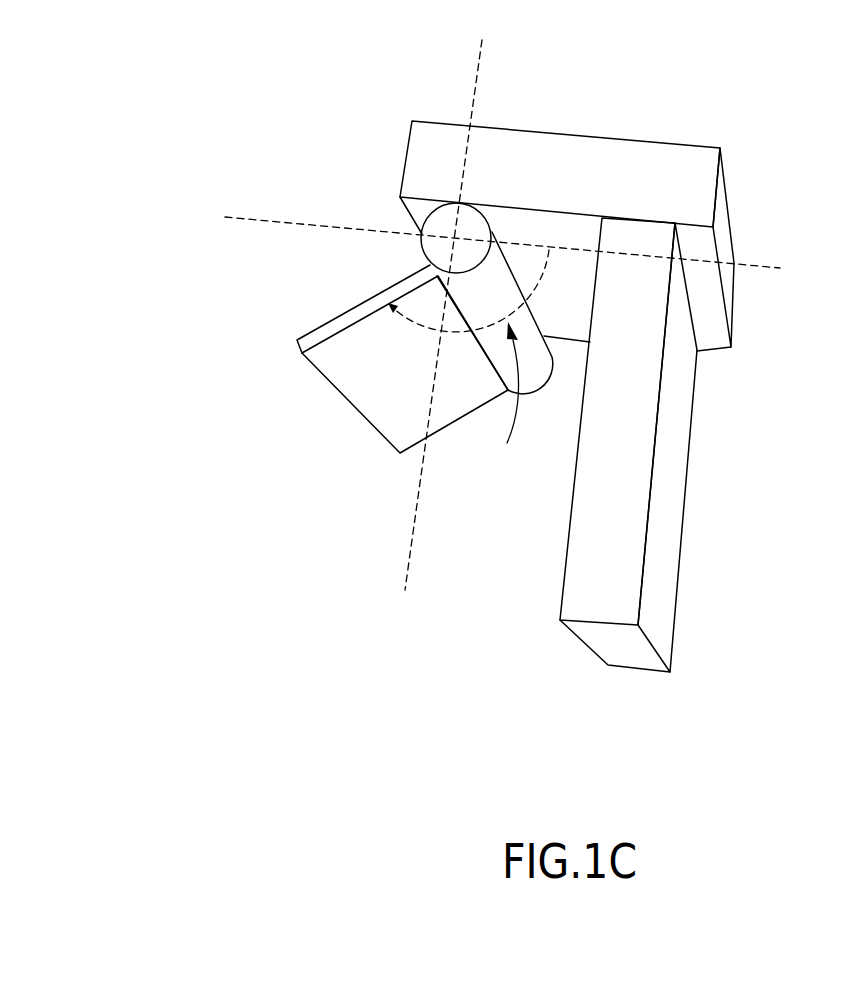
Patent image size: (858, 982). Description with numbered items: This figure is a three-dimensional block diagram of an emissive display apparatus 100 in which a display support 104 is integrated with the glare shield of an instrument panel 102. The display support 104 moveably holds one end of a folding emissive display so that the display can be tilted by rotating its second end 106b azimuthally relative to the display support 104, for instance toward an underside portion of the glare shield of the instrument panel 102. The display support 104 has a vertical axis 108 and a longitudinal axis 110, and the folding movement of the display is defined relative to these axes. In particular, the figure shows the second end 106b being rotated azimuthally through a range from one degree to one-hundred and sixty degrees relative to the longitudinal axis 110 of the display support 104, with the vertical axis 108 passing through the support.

The emissive display apparatus 100 is at (162, 103).
The instrument panel 102 is at (568, 133).
The display support 104 is at (437, 222).
The second end 106b is at (301, 356).
The vertical axis 108 is at (478, 70).
The longitudinal axis 110 is at (240, 217).